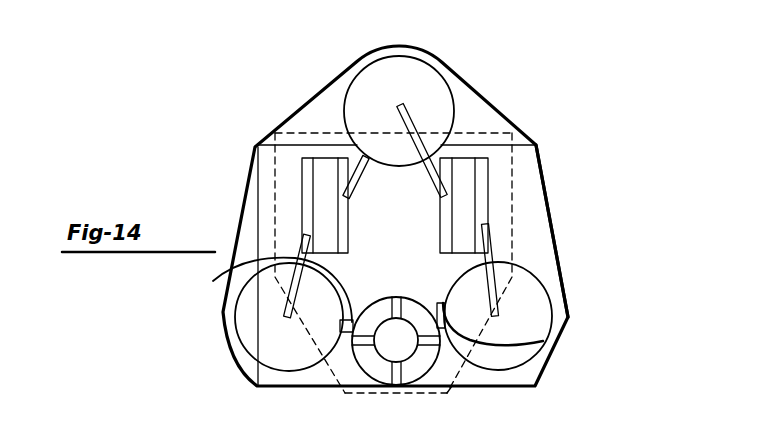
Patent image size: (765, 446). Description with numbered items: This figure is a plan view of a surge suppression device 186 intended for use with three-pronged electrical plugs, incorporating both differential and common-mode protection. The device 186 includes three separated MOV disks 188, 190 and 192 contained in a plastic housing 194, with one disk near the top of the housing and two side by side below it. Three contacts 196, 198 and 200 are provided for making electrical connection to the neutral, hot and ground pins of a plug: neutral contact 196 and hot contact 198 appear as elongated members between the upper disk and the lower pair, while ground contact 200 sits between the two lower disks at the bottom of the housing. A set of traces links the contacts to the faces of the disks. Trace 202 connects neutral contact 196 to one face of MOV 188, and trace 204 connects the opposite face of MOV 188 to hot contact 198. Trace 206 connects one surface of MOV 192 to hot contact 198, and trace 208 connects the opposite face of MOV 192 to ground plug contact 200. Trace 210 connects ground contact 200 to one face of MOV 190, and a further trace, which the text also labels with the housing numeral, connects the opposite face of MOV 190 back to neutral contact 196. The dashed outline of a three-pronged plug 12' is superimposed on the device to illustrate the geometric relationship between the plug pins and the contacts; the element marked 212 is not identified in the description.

The surge suppression device 186 is at (493, 97).
The MOV disk 188 is at (423, 88).
The MOV disk 190 is at (538, 313).
The MOV disk 192 is at (263, 315).
The plastic housing 194 is at (537, 243).
The neutral contact 196 is at (480, 218).
The hot contact 198 is at (305, 177).
The ground contact 200 is at (353, 360).
The trace 202 is at (414, 171).
The trace 204 is at (365, 157).
The trace 206 is at (213, 281).
The trace 208 is at (310, 248).
The trace 210 is at (543, 341).
The axis line 212 is at (493, 285).
The three-pronged plug 12' is at (451, 263).